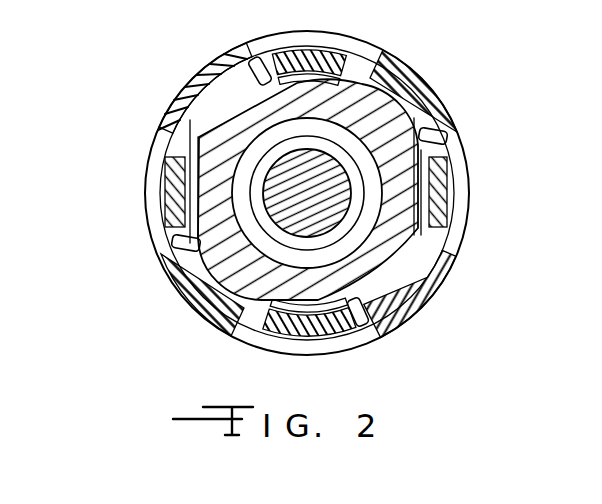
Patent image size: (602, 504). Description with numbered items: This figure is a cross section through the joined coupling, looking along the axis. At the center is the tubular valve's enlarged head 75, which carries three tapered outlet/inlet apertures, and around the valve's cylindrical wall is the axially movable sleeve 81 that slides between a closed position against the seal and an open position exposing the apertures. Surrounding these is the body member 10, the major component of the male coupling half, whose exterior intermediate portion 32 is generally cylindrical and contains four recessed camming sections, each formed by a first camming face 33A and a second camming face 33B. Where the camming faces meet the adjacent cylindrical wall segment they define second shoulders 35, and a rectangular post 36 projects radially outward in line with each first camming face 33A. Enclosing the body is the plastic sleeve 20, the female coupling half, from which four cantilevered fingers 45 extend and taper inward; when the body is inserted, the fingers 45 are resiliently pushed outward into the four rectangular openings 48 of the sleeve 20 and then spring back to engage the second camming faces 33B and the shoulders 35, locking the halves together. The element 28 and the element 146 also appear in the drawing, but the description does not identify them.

The body member 10 is at (392, 141).
The sleeve 20 is at (415, 322).
The shaft 28 is at (587, 16).
The intermediate portion 32 is at (458, 250).
The first camming face 33A is at (242, 95).
The second camming face 33B is at (396, 58).
The second shoulders 35 is at (205, 255).
The rectangular post 36 is at (257, 56).
The fingers 45 is at (306, 54).
The rectangular openings 48 is at (368, 55).
The enlarged head 75 is at (333, 204).
The sleeve 81 is at (292, 240).
The bearing body section 146 is at (258, 148).